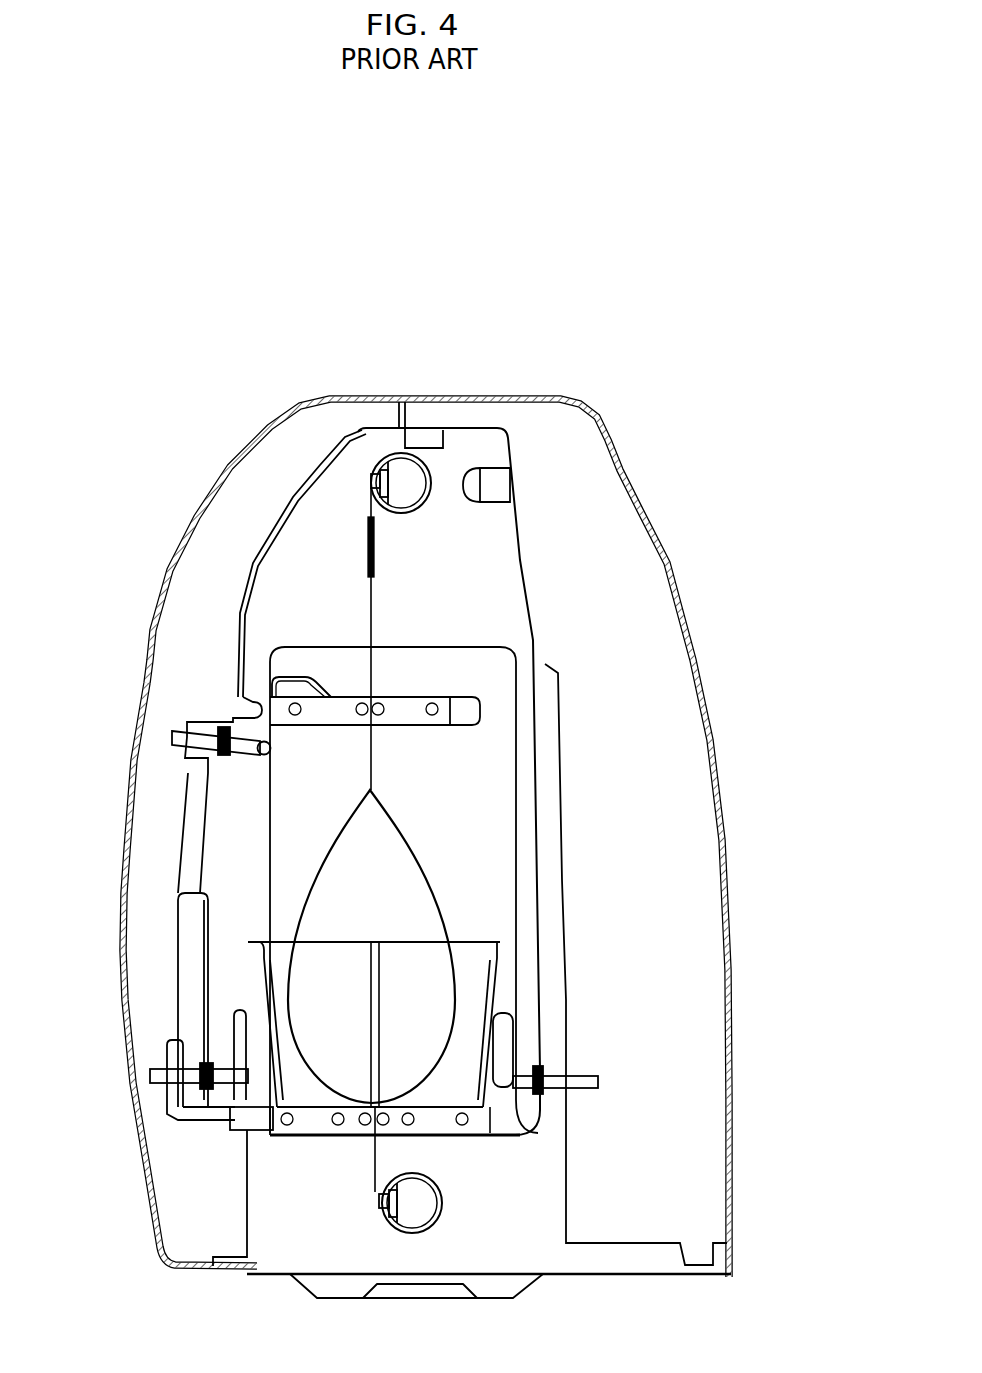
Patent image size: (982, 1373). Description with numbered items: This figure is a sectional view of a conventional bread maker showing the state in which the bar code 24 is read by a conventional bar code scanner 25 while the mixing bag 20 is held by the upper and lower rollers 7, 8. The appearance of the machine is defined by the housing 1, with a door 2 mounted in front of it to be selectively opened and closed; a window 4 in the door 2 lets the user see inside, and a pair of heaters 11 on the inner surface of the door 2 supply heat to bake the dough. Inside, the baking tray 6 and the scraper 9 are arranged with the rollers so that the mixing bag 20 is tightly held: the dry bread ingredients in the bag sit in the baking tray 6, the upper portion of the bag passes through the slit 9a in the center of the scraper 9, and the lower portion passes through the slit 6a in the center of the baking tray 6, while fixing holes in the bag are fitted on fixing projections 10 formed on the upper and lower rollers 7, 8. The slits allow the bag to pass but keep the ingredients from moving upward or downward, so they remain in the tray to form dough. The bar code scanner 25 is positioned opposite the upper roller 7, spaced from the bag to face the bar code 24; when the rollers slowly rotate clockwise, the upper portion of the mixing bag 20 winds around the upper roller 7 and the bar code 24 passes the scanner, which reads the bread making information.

The housing 1 is at (733, 876).
The door 2 is at (217, 493).
The window 4 is at (123, 856).
The baking tray 6 is at (258, 968).
The slit 6a is at (373, 1137).
The upper roller 7 is at (413, 477).
The lower roller 8 is at (422, 1203).
The scraper 9 is at (283, 693).
The slit 9a is at (373, 695).
The fixing projection 10 is at (380, 470).
The heater 11 is at (263, 750).
The mixing bag 20 is at (400, 823).
The bar code 24 is at (365, 547).
The bar code scanner 25 is at (493, 497).